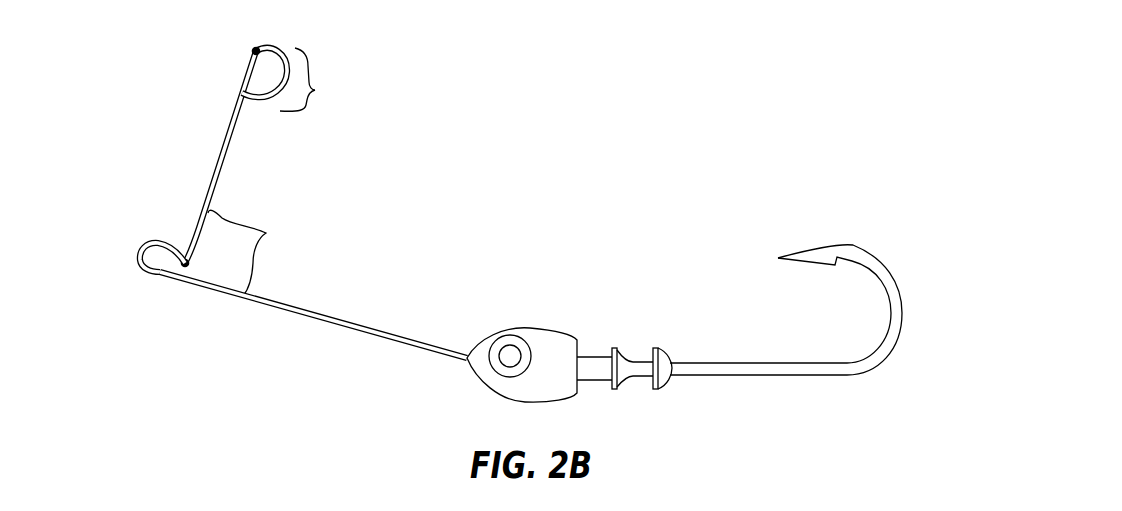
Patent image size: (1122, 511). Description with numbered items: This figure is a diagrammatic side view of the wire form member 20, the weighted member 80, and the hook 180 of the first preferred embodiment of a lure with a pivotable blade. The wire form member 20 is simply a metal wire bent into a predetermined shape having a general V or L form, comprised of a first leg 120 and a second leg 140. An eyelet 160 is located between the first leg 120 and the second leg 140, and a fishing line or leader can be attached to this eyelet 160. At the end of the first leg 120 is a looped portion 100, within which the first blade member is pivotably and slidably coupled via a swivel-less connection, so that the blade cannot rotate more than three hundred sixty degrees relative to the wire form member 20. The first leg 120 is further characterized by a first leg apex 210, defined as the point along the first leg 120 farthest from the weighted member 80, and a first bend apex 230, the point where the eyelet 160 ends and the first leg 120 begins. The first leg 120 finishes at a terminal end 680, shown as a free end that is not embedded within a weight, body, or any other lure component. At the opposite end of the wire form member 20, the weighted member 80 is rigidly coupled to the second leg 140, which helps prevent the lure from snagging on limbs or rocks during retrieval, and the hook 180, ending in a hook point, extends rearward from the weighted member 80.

The wire form member 20 is at (256, 253).
The weighted member 80 is at (553, 351).
The looped portion 100 is at (321, 79).
The first leg 120 is at (192, 27).
The second leg 140 is at (456, 367).
The eyelet 160 is at (148, 258).
The hook 180 is at (867, 272).
The first leg apex 210 is at (253, 52).
The first bend apex 230 is at (185, 258).
The terminal end 680 is at (245, 102).